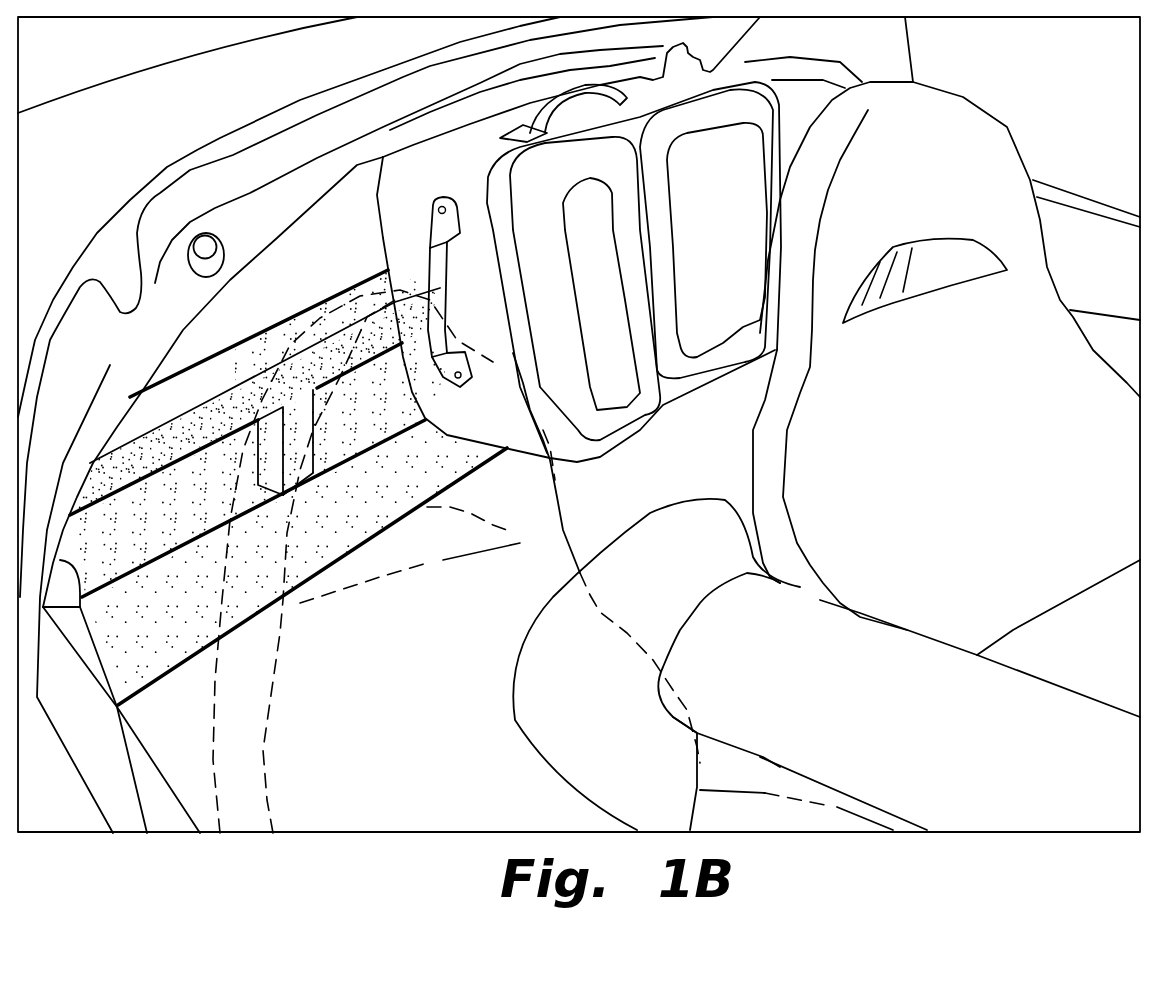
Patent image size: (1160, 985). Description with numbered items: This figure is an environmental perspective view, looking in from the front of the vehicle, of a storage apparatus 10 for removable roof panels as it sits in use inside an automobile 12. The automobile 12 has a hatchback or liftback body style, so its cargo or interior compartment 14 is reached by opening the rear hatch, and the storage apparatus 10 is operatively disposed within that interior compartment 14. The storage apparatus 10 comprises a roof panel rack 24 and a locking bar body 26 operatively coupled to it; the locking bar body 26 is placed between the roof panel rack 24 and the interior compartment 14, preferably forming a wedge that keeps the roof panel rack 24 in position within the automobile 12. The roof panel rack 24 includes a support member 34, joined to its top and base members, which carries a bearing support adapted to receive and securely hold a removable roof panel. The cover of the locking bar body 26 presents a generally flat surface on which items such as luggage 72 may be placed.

The storage apparatus 10 is at (309, 270).
The automobile 12 is at (122, 157).
The interior compartment 14 is at (862, 51).
The roof panel rack 24 is at (236, 357).
The locking bar body 26 is at (172, 665).
The support member 34 is at (300, 418).
The luggage 72 is at (722, 226).